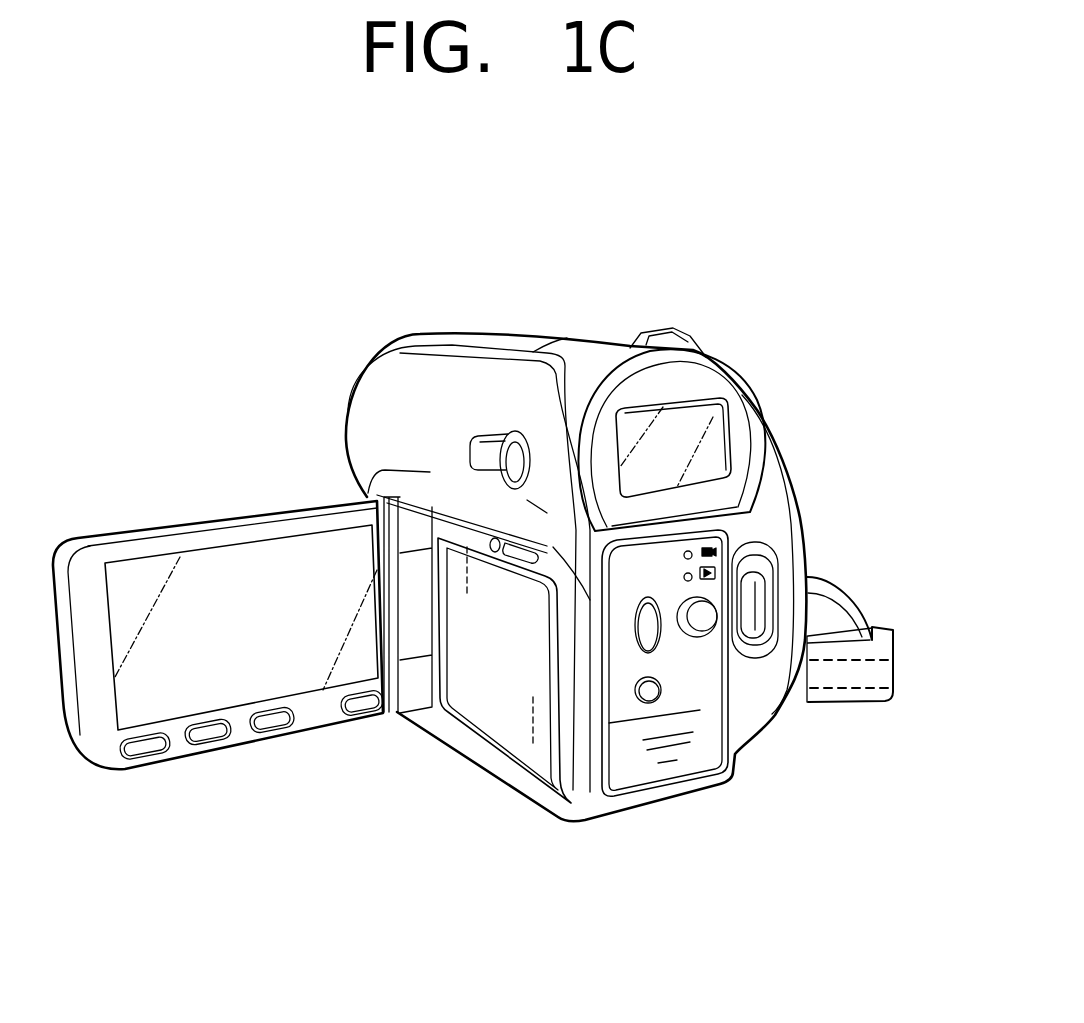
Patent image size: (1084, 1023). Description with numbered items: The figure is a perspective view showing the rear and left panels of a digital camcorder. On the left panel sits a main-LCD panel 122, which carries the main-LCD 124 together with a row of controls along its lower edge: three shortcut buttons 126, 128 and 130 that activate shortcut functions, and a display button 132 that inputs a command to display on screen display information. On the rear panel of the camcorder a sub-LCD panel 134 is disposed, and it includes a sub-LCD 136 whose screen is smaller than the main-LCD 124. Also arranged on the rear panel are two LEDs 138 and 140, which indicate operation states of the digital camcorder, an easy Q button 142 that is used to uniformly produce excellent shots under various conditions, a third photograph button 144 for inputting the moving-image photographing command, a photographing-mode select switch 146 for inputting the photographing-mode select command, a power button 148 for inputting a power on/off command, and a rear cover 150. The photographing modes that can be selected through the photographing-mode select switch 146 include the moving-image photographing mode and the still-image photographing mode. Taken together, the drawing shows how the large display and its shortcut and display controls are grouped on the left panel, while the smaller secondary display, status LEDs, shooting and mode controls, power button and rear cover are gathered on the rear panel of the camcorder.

The main-LCD panel 122 is at (87, 547).
The main-LCD 124 is at (257, 557).
The shortcut button 126 is at (150, 748).
The shortcut button 128 is at (217, 735).
The shortcut button 130 is at (277, 722).
The display button 132 is at (363, 708).
The sub-LCD panel 134 is at (733, 358).
The sub-LCD 136 is at (703, 433).
The LED 138 is at (691, 552).
The LED 140 is at (692, 574).
The easy Q button 142 is at (702, 614).
The third photograph button 144 is at (754, 602).
The photographing-mode select switch 146 is at (650, 627).
The power button 148 is at (653, 695).
The rear cover 150 is at (680, 768).